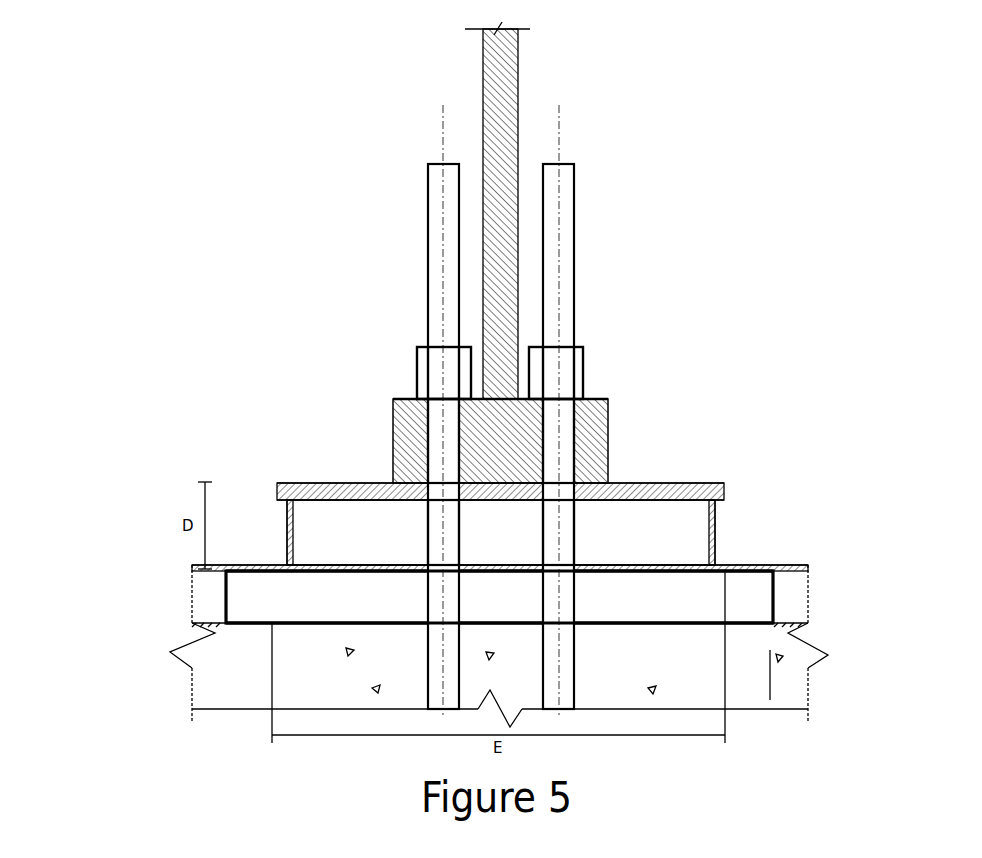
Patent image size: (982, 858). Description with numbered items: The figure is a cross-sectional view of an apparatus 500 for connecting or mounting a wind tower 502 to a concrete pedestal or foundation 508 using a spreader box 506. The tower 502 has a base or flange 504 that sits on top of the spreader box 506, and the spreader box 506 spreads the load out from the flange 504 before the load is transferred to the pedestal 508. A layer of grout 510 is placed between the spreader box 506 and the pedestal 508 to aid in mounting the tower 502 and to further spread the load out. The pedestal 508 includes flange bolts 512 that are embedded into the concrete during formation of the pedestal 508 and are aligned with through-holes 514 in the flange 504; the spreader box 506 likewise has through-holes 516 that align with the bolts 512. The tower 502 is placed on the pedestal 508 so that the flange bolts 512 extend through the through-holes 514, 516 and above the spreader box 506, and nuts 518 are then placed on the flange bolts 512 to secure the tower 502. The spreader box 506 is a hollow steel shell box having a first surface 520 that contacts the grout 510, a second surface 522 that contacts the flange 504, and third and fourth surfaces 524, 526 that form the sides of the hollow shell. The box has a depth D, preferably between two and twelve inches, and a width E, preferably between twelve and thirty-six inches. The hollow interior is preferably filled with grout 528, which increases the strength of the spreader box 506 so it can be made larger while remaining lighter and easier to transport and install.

The apparatus 500 is at (84, 710).
The tower 502 is at (518, 55).
The flange 504 is at (608, 455).
The spreader box 506 is at (715, 505).
The pedestal 508 is at (755, 678).
The grout 510 is at (773, 578).
The flange bolts 512 is at (427, 232).
The through-holes 514 is at (426, 441).
The through-holes 516 is at (428, 533).
The nuts 518 is at (583, 352).
The first surface 520 is at (293, 568).
The second surface 522 is at (340, 492).
The third surface 524 is at (291, 514).
The fourth surface 526 is at (713, 539).
The grout 528 is at (662, 512).